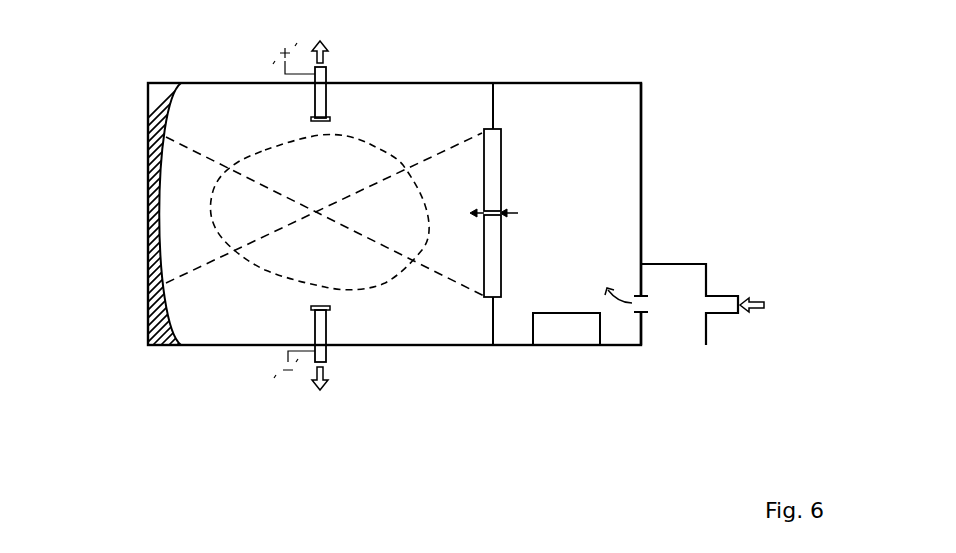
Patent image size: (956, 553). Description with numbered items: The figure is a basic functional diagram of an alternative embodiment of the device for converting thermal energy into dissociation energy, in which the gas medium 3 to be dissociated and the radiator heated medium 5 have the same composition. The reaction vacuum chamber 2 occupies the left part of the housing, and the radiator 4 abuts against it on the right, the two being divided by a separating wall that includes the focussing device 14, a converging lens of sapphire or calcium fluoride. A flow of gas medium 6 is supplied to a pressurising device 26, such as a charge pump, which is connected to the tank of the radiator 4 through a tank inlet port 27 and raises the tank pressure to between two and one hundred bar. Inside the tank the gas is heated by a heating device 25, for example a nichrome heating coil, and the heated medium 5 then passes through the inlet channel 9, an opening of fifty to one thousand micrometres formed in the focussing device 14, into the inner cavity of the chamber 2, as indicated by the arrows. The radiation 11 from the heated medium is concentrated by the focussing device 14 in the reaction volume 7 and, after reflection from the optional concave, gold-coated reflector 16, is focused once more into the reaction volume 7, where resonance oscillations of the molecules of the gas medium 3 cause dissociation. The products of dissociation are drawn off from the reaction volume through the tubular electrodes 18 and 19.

The reaction vacuum chamber 2 is at (471, 82).
The gas medium 3 is at (225, 183).
The radiator 4 is at (641, 88).
The radiator heated medium 5 is at (602, 192).
The flow of gas medium 6 is at (761, 305).
The reaction volume 7 is at (263, 157).
The inlet channel 9 is at (493, 217).
The radiation 11 is at (428, 384).
The focussing device 14 is at (502, 183).
The concave reflector 16 is at (160, 303).
The tubular electrode 18 is at (327, 72).
The tubular electrode 19 is at (327, 354).
The heating device 25 is at (563, 328).
The pressurising device 26 is at (683, 284).
The tank inlet port 27 is at (642, 311).